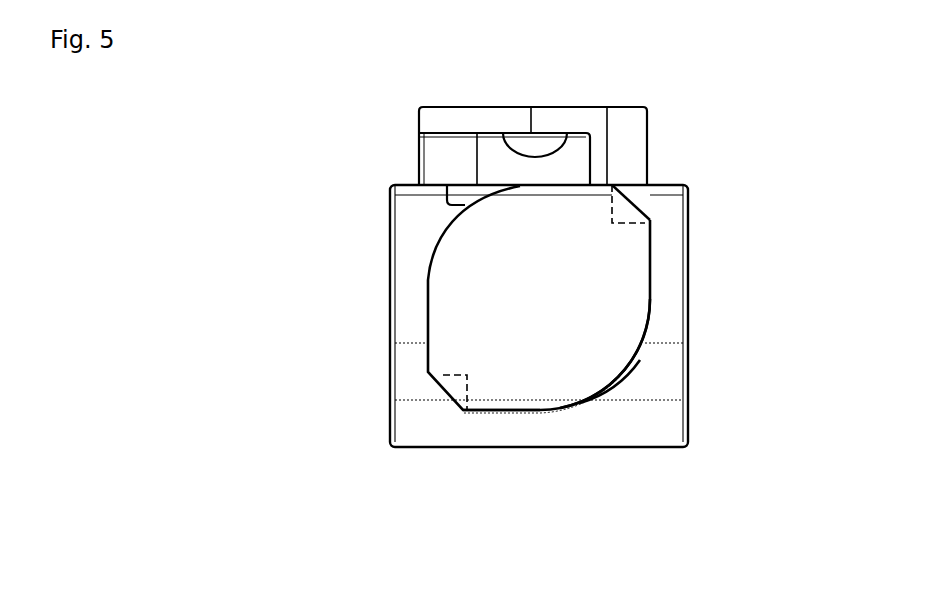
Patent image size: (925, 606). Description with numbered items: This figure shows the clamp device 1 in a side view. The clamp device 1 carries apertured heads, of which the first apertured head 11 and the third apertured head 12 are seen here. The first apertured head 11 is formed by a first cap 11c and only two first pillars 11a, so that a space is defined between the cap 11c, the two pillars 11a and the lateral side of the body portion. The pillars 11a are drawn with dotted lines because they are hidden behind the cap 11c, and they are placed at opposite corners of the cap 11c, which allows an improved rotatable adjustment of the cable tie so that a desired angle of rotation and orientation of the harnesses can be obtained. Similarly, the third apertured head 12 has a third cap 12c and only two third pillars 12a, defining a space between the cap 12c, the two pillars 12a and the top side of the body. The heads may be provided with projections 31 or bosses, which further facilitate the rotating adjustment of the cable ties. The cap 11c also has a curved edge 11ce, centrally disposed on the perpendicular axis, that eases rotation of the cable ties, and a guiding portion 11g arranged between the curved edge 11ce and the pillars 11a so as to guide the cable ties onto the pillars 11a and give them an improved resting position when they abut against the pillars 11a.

The clamp device 1 is at (346, 318).
The first apertured head 11 is at (628, 319).
The first pillars 11a is at (637, 217).
The first cap 11c is at (585, 377).
The curved edge 11ce is at (608, 393).
The guiding portion 11g is at (518, 418).
The third apertured head 12 is at (672, 116).
The third pillars 12a is at (432, 162).
The third cap 12c is at (505, 118).
The projections 31 is at (513, 137).